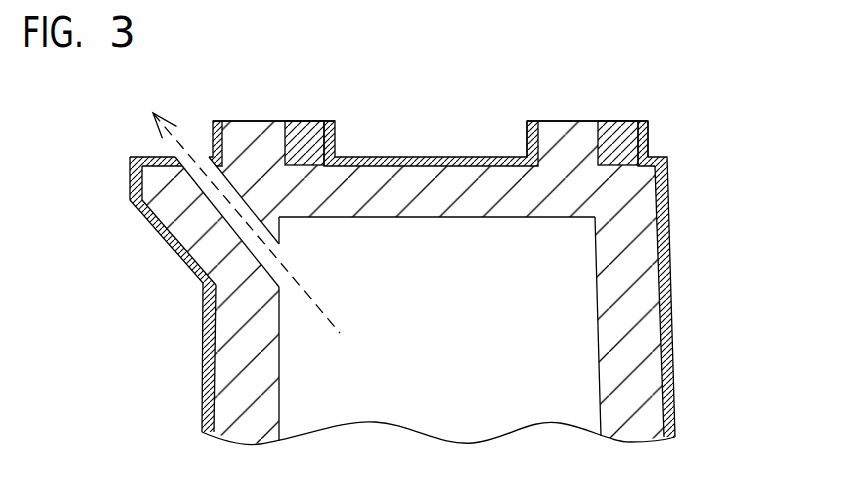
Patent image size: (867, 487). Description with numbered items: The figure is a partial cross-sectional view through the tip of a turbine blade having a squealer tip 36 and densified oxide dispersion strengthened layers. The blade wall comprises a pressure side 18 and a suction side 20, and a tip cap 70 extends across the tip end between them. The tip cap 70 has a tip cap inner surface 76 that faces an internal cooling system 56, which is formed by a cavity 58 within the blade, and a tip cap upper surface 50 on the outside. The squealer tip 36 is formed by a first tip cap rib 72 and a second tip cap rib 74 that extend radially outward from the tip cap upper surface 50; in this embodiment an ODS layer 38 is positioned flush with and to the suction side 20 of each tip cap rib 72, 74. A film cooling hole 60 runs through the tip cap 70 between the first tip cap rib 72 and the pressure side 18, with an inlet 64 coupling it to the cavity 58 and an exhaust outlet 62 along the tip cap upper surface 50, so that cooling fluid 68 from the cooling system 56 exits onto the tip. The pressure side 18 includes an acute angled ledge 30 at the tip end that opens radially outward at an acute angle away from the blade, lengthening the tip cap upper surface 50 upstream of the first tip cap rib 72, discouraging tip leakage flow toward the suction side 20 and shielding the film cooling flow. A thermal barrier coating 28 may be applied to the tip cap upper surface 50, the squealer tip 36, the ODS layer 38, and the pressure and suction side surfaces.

The pressure side 18 is at (186, 350).
The suction side 20 is at (685, 346).
The thermal barrier coating 28 is at (669, 272).
The angled ledge 30 is at (175, 198).
The squealer tip 36 is at (573, 137).
The densified oxide dispersion strengthened (ODS) layer 38 is at (302, 140).
The tip cap upper surface 50 is at (427, 165).
The cooling system 56 is at (452, 375).
The cavity 58 is at (452, 333).
The film cooling hole 60 is at (248, 212).
The exhaust outlet 62 is at (198, 157).
The inlet 64 is at (279, 246).
The cooling fluid 68 is at (317, 309).
The tip cap 70 is at (402, 183).
The first tip cap rib 72 is at (249, 133).
The second tip cap rib 74 is at (552, 133).
The tip cap inner surface 76 is at (467, 217).